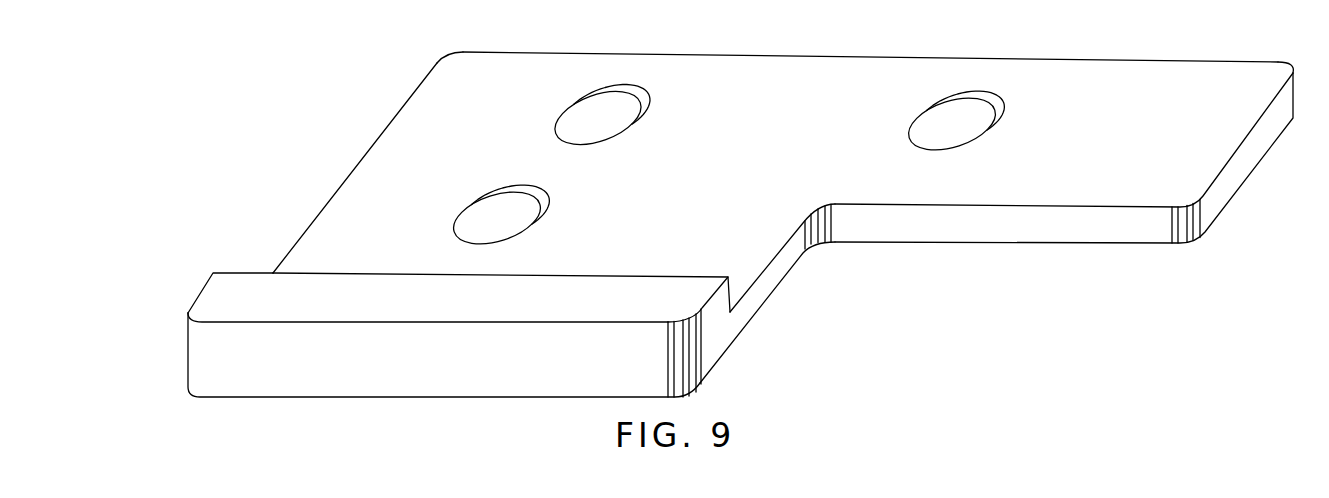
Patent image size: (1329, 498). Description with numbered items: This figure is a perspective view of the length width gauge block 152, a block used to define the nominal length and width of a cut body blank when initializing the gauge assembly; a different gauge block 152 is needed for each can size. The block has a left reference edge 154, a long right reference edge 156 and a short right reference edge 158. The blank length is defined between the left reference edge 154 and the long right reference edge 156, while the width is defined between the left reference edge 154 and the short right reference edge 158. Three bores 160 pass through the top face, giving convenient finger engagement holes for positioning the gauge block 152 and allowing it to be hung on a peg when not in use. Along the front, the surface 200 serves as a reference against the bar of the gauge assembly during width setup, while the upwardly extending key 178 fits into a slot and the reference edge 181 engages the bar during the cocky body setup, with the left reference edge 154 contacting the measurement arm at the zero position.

The length width gauge block 152 is at (732, 166).
The left reference edge 154 is at (369, 149).
The long right reference edge 156 is at (1228, 188).
The short right reference edge 158 is at (755, 299).
The bores 160 is at (614, 144).
The upwardly extending key 178 is at (213, 304).
The reference edge 181 is at (838, 56).
The surface 200 is at (400, 372).